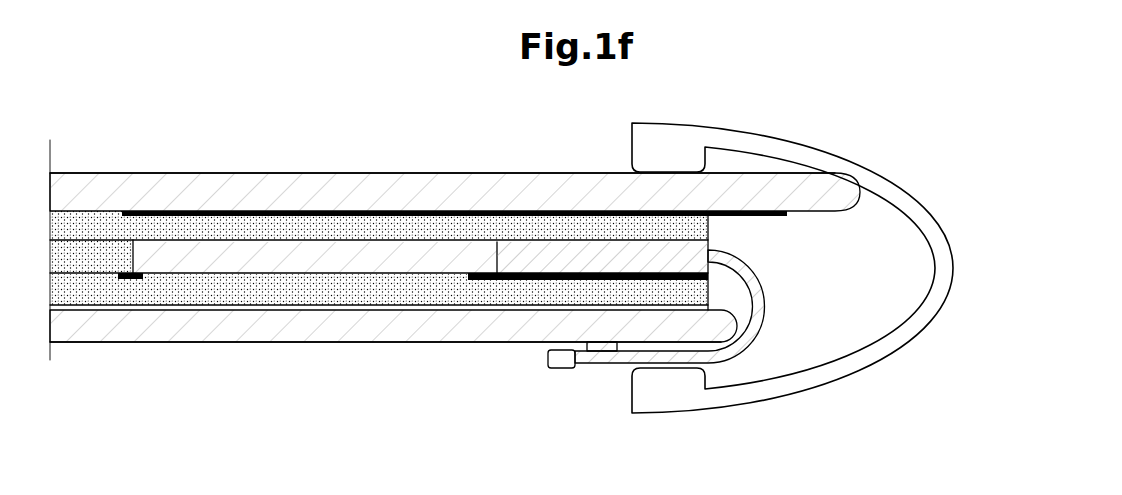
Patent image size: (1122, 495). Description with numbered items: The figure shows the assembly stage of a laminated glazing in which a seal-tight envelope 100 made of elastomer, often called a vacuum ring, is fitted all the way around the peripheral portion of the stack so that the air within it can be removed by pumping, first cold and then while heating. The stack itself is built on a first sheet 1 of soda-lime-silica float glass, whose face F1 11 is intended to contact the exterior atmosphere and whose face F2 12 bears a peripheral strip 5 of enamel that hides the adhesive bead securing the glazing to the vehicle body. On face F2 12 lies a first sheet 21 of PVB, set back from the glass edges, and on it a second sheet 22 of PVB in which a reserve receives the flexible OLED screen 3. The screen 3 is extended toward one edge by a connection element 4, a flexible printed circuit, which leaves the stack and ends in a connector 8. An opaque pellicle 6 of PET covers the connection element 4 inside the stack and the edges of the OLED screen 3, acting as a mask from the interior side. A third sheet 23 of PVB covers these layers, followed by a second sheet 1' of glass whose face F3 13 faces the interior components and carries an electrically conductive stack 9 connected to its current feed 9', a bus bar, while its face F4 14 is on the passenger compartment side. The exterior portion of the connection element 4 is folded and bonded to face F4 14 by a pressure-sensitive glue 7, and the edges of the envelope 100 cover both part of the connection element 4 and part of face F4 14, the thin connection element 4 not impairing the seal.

The first sheet of glass 1 is at (455, 147).
The second sheet of glass 1' is at (393, 359).
The OLED screen 3 is at (423, 258).
The connection element 4 is at (695, 258).
The peripheral strip of enamel 5 is at (362, 208).
The opaque pellicle 6 is at (140, 277).
The glue 7 is at (602, 353).
The connector 8 is at (562, 360).
The electrically conductive stack 9 is at (360, 344).
The current feed 9' is at (540, 346).
The face F1 11 is at (255, 172).
The face F2 12 is at (100, 213).
The face F3 13 is at (233, 308).
The face F4 14 is at (298, 344).
The first sheet of PVB 21 is at (185, 233).
The second sheet of PVB 22 is at (73, 257).
The third sheet of PVB 23 is at (83, 285).
The seal-tight envelope 100 is at (883, 188).